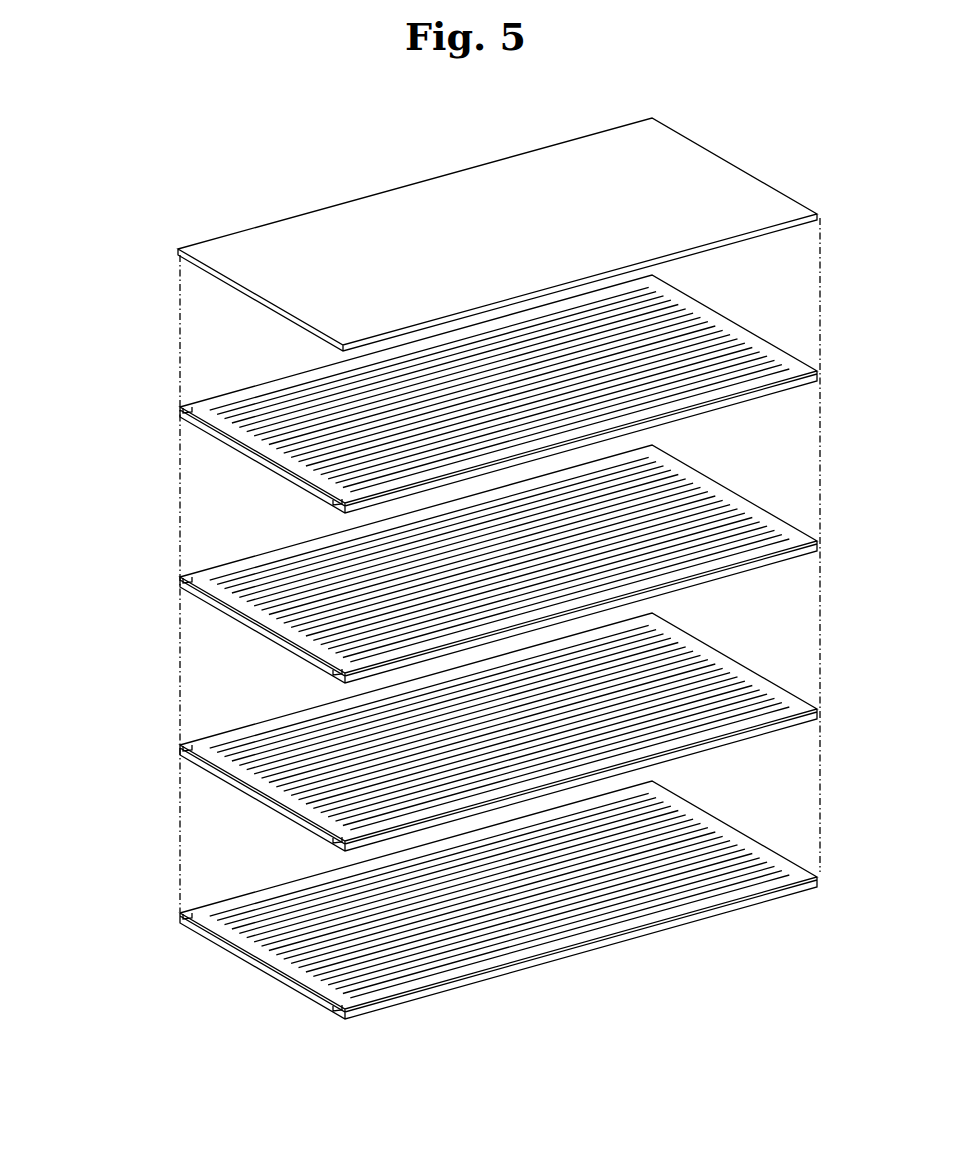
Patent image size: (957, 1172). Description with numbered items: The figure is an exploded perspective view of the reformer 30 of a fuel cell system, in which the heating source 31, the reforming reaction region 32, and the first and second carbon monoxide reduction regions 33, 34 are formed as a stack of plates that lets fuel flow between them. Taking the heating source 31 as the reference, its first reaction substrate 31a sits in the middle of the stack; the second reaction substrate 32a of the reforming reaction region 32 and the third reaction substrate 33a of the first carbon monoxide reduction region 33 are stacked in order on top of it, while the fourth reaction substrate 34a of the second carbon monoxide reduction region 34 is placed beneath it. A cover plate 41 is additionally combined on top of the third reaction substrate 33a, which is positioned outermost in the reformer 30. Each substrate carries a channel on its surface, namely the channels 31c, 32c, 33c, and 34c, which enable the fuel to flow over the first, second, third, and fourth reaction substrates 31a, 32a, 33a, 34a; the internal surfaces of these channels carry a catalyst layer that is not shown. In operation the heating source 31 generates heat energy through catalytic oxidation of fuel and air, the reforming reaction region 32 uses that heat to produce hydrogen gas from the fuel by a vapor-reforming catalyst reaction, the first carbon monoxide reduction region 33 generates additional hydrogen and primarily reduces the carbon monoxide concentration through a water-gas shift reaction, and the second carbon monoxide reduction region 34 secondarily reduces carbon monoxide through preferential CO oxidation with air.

The reformer 30 is at (102, 214).
The cover plate 41 is at (780, 156).
The first carbon monoxide reduction region 33 is at (496, 394).
The channel 33c is at (716, 327).
The third reaction substrate 33a is at (212, 452).
The reforming reaction region 32 is at (496, 564).
The channel 32c is at (716, 497).
The second reaction substrate 32a is at (212, 622).
The heating source 31 is at (496, 732).
The channel 31c is at (716, 665).
The first reaction substrate 31a is at (212, 790).
The second carbon monoxide reduction region 34 is at (496, 900).
The channel 34c is at (716, 833).
The fourth reaction substrate 34a is at (212, 958).